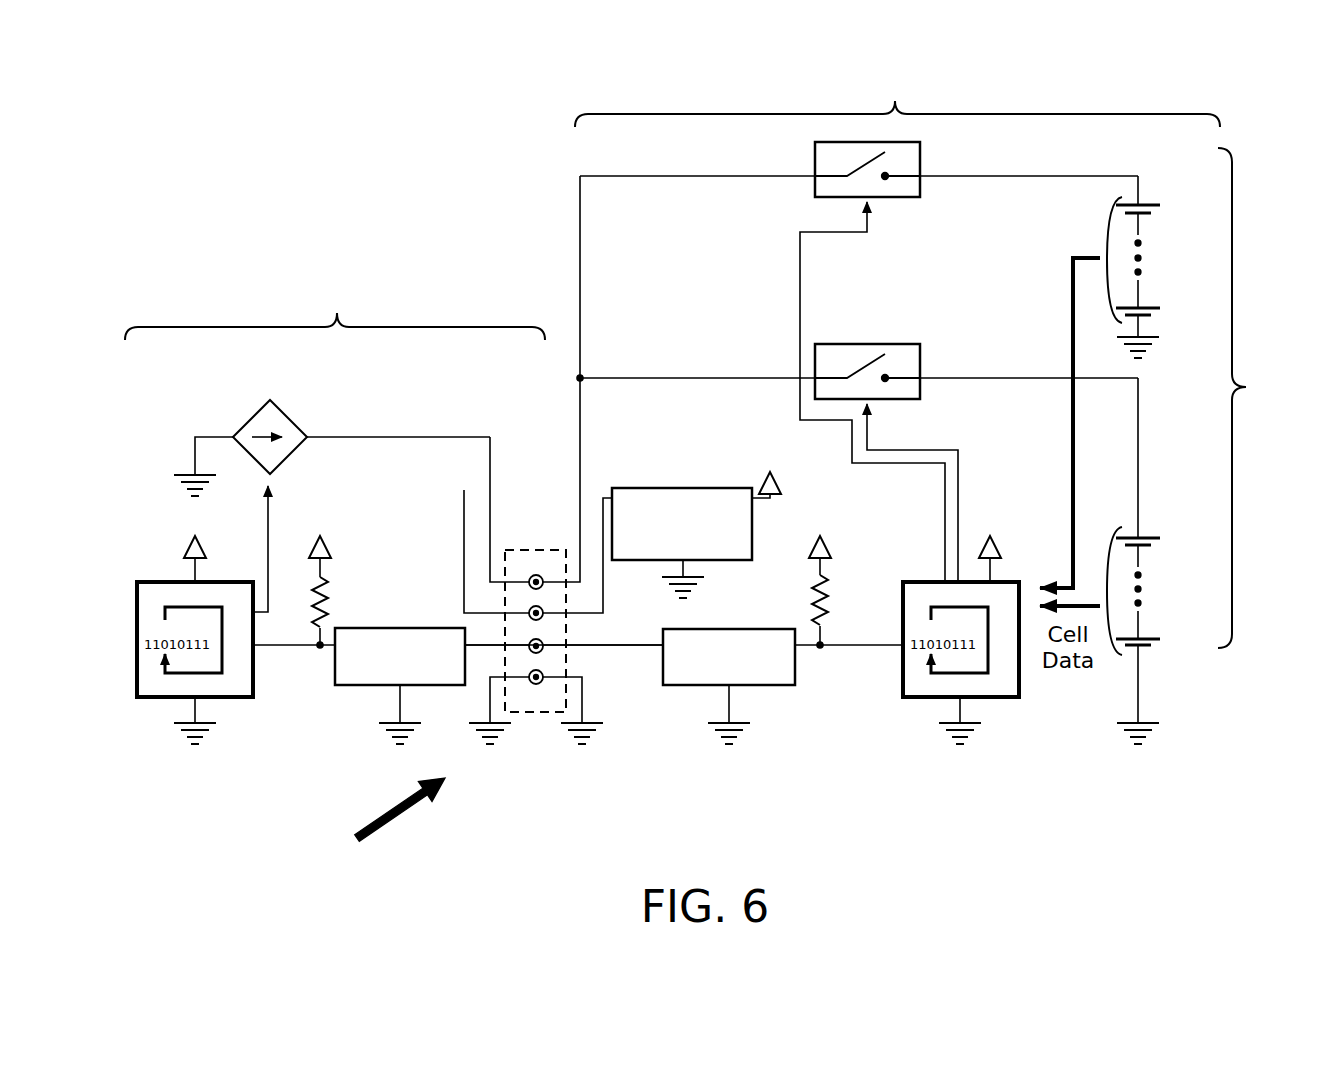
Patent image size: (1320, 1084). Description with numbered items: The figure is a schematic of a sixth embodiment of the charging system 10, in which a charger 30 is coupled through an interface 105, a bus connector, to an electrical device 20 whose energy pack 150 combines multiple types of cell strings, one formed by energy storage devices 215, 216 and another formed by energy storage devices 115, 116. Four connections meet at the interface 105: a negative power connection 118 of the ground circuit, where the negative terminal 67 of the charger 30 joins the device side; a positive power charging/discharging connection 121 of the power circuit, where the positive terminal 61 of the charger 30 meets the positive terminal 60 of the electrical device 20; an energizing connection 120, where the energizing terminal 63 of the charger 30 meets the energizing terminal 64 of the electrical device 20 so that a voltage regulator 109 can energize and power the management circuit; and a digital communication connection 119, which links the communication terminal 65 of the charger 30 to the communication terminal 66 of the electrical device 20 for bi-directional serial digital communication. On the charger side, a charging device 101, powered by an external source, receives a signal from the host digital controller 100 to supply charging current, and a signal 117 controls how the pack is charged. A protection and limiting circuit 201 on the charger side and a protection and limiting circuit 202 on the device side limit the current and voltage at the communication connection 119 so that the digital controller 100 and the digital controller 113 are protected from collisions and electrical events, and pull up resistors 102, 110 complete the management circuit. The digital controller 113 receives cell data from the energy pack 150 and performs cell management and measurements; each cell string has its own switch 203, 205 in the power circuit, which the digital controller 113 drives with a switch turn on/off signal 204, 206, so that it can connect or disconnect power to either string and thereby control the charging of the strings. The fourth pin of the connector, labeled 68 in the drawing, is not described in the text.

The charging system 10 is at (366, 826).
The electrical device 20 is at (897, 100).
The charger 30 is at (335, 311).
The positive terminal of the electrical device 60 is at (547, 576).
The positive terminal of the charger 61 is at (521, 577).
The energizing terminal of the charger 63 is at (522, 611).
The energizing terminal of the electrical device 64 is at (548, 611).
The communication terminal of the charger 65 is at (522, 644).
The communication terminal of the electrical device 66 is at (547, 644).
The negative terminal of the charger 67 is at (522, 675).
The connector pin 68 is at (546, 681).
The digital controller 100 is at (214, 705).
The charging device 101 is at (303, 404).
The pull up resistor 102 is at (346, 590).
The interface 105 is at (532, 503).
The voltage regulator 109 is at (768, 530).
The pull up resistor 110 is at (843, 589).
The digital controller 113 is at (990, 706).
The energy storage device 115 is at (1144, 534).
The energy storage device 116 is at (1144, 636).
The signal 117 is at (283, 517).
The negative power connection 118 is at (536, 711).
The digital communication connection 119 is at (545, 650).
The energizing connection 120 is at (548, 621).
The positive power charging/discharging connection 121 is at (538, 572).
The energy pack 150 is at (1259, 398).
The protection and limiting circuit 201 is at (388, 694).
The protection and limiting circuit 202 is at (743, 698).
The switch 203 is at (929, 402).
The switch turn on/off signal 204 is at (967, 467).
The switch 205 is at (929, 196).
The switch turn on/off signal 206 is at (872, 242).
The energy storage device 215 is at (1144, 202).
The energy storage device 216 is at (1144, 304).